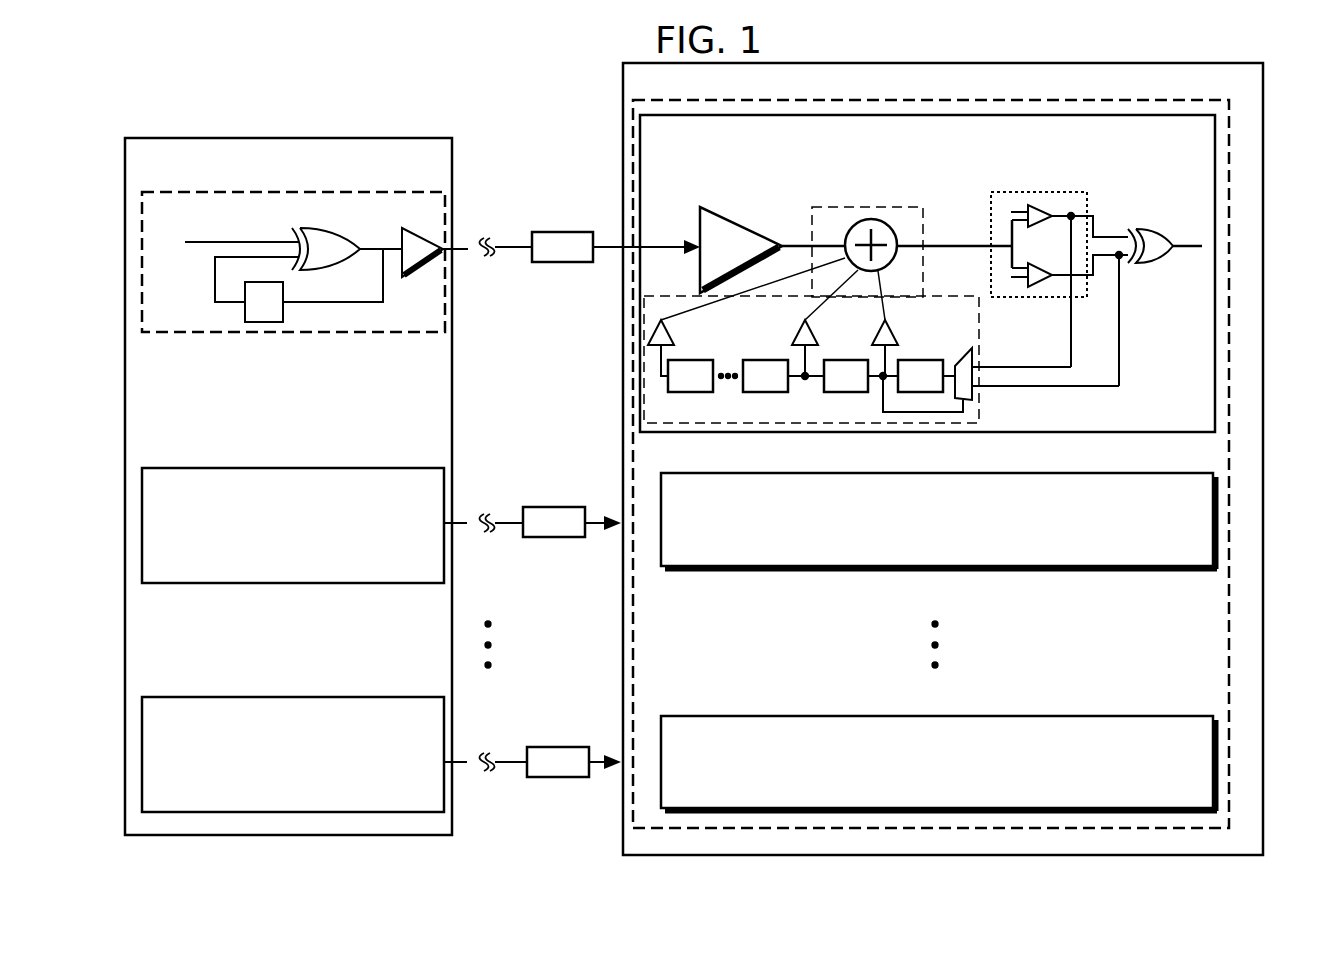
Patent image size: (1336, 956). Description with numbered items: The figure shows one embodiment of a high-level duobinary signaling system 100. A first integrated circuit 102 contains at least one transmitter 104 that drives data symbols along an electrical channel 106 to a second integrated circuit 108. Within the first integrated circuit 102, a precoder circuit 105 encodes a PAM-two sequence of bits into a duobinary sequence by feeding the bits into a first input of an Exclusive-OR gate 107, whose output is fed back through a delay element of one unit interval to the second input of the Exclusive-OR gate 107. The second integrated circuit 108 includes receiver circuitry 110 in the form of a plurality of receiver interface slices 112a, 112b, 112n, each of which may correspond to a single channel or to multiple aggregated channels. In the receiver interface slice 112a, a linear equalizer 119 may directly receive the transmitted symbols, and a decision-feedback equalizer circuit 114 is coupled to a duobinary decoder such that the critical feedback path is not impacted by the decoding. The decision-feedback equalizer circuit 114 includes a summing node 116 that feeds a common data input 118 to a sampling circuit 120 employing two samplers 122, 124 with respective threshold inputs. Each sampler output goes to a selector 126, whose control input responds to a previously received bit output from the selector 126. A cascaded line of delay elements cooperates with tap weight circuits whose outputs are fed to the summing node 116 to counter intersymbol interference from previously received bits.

The system 100 is at (225, 118).
The first integrated circuit 102 is at (172, 171).
The transmitter 104 is at (427, 270).
The precoder circuit 105 is at (355, 333).
The electrical channel 106 is at (548, 263).
The Exclusive-OR gate 107 is at (330, 229).
The second integrated circuit 108 is at (674, 88).
The receiver circuitry 110 is at (1230, 136).
The receiver interface slice 112a is at (908, 160).
The receiver interface slice 112b is at (960, 540).
The receiver interface slice 112n is at (960, 784).
The decision-feedback equalizer circuit 114 is at (968, 393).
The summing node 116 is at (870, 218).
The common data input 118 is at (971, 245).
The linear equalizer 119 is at (735, 225).
The sampling circuit 120 is at (1088, 200).
The sampler 122 is at (1045, 205).
The sampler 124 is at (1043, 288).
The selector 126 is at (960, 366).